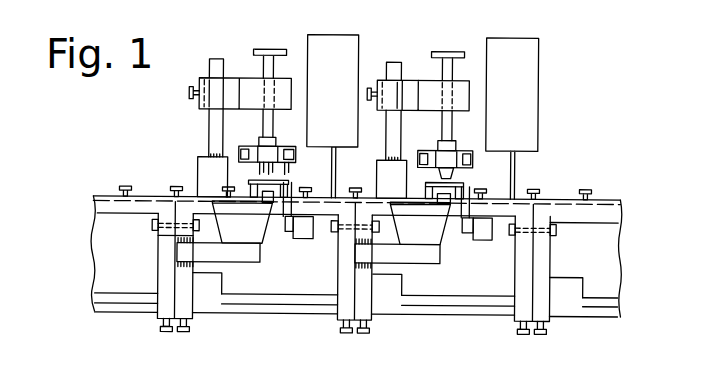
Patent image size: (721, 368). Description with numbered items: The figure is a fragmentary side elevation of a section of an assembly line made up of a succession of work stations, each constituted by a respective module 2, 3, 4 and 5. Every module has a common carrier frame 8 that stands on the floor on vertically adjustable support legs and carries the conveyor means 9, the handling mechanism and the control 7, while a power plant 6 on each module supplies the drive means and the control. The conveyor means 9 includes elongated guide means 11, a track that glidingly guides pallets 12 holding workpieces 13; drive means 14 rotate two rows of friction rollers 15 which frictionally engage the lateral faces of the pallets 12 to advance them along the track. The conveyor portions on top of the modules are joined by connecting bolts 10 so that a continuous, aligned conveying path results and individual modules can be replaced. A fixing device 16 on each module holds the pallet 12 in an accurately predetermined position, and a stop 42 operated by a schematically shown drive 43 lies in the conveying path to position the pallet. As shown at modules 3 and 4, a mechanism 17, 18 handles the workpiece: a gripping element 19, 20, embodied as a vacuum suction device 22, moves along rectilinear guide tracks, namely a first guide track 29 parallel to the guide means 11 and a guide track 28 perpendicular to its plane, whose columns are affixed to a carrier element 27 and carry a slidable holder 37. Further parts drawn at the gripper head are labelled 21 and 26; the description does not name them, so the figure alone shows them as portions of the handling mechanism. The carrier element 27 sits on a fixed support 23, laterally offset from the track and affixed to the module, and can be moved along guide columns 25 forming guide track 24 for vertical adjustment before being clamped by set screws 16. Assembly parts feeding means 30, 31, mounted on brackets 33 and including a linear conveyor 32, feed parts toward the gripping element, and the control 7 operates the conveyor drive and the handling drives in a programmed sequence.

The module 2 is at (126, 327).
The module 3 is at (311, 353).
The module 4 is at (490, 323).
The module 5 is at (592, 330).
The power plant 6 is at (205, 280).
The control 7 is at (333, 50).
The common carrier frame 8 is at (100, 300).
The conveyor means 9 is at (103, 190).
The connecting bolts 10 is at (152, 227).
The elongated guide means 11 is at (100, 190).
The pallet 12 is at (248, 186).
The workpiece 13 is at (267, 203).
The drive means 14 is at (312, 241).
The friction rollers 15 is at (355, 190).
The fixing device 16 is at (258, 178).
The handling mechanism 17 is at (237, 73).
The handling mechanism 18 is at (414, 70).
The gripping element 19 is at (256, 150).
The gripping element 20 is at (458, 128).
The gripper head 21 is at (243, 138).
The vacuum suction device 22 is at (462, 148).
The fixed support 23 is at (200, 178).
The guide track 24 is at (215, 57).
The guide columns 25 is at (214, 72).
The adjusting knob 26 is at (192, 92).
The carrier element 27 is at (212, 103).
The guide track 28 is at (257, 68).
The first guide track 29 is at (300, 242).
The assembly parts feeding means 30 is at (252, 232).
The assembly parts feeding means 31 is at (432, 256).
The linear conveyor 32 is at (196, 233).
The brackets 33 is at (178, 250).
The holder 37 is at (272, 142).
The stop 42 is at (286, 200).
The drive 43 is at (289, 240).